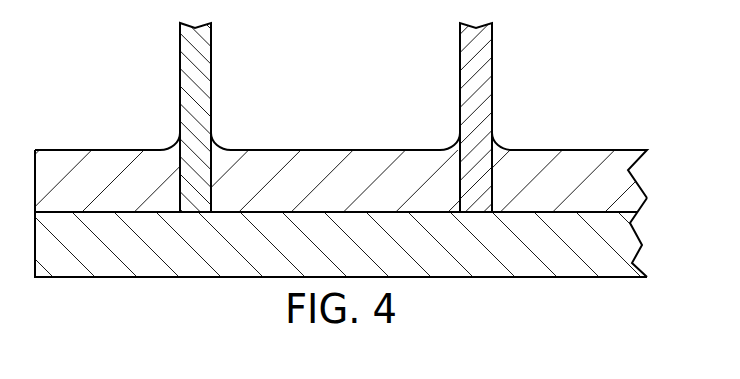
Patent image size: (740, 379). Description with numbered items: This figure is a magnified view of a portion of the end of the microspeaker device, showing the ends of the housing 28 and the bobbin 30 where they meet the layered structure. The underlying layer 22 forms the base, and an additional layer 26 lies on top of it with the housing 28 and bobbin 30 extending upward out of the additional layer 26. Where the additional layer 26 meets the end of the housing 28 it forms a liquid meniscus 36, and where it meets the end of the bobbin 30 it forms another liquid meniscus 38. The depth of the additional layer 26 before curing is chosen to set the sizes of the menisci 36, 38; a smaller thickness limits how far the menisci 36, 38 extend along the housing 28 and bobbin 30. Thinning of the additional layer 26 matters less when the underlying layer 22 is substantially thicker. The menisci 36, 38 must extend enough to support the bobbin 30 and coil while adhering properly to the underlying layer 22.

The underlying layer 22 is at (626, 248).
The additional layer 26 is at (626, 165).
The housing 28 is at (180, 28).
The bobbin 30 is at (492, 40).
The liquid meniscus 36 is at (194, 110).
The liquid meniscus 38 is at (477, 110).